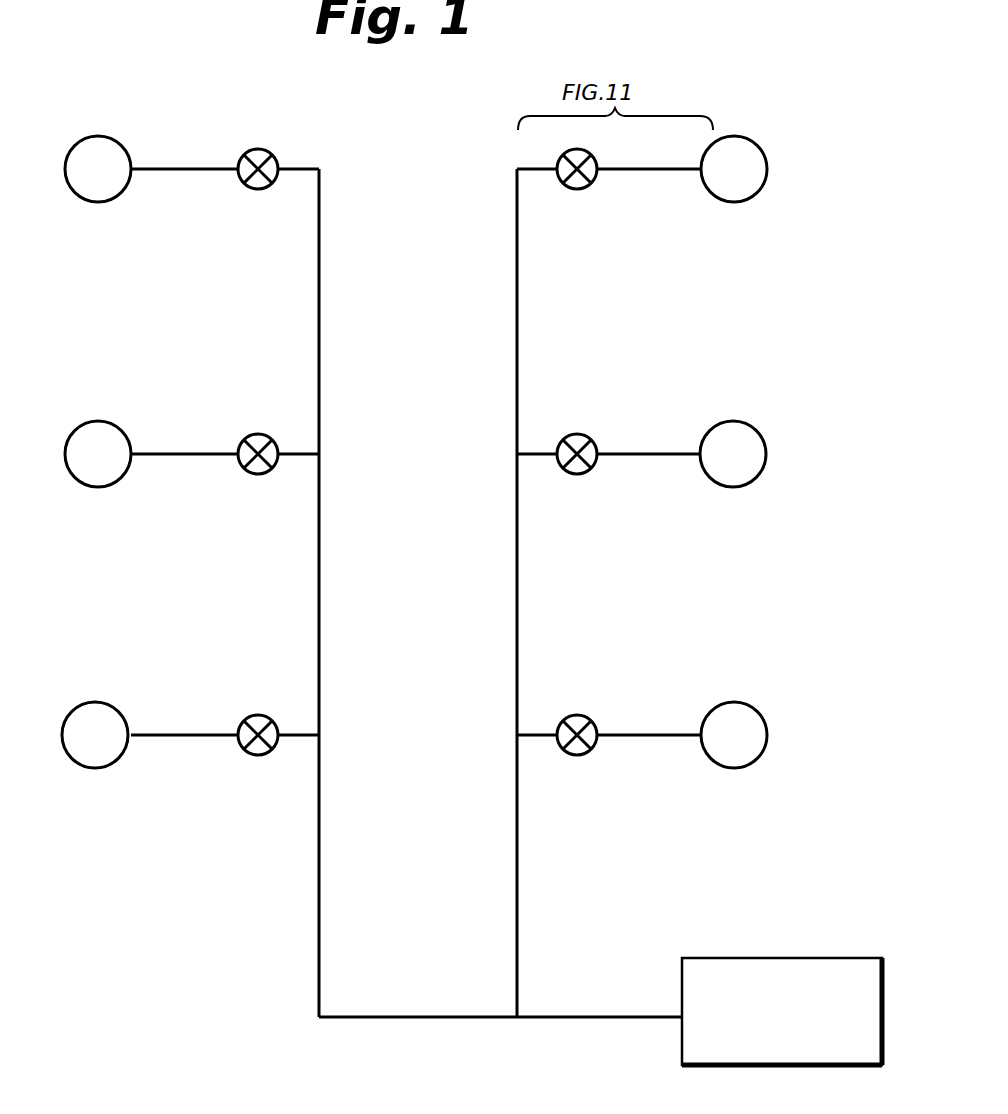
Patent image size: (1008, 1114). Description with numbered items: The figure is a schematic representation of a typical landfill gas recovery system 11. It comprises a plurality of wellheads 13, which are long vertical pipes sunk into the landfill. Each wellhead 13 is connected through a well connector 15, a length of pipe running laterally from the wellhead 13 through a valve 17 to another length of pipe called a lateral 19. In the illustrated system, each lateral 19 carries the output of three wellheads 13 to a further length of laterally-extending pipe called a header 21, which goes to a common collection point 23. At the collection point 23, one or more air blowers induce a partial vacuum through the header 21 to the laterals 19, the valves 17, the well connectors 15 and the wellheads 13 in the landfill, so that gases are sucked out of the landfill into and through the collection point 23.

The oil and gas gathering system 11 is at (738, 332).
The wellhead 13 is at (78, 200).
The well connector 15 is at (205, 170).
The valve 17 is at (262, 190).
The lateral 19 is at (319, 280).
The header 21 is at (570, 1017).
The collection point 23 is at (775, 958).